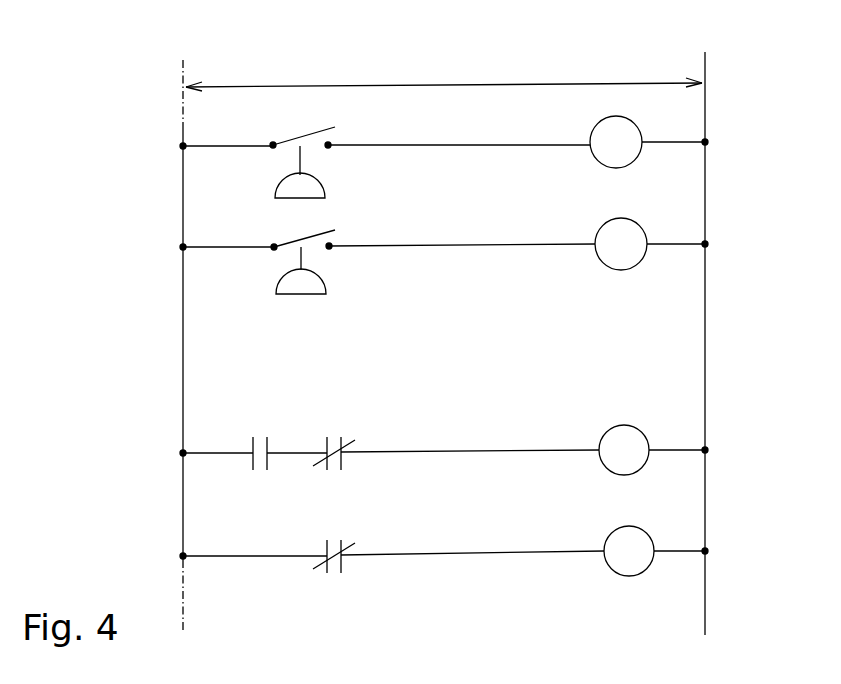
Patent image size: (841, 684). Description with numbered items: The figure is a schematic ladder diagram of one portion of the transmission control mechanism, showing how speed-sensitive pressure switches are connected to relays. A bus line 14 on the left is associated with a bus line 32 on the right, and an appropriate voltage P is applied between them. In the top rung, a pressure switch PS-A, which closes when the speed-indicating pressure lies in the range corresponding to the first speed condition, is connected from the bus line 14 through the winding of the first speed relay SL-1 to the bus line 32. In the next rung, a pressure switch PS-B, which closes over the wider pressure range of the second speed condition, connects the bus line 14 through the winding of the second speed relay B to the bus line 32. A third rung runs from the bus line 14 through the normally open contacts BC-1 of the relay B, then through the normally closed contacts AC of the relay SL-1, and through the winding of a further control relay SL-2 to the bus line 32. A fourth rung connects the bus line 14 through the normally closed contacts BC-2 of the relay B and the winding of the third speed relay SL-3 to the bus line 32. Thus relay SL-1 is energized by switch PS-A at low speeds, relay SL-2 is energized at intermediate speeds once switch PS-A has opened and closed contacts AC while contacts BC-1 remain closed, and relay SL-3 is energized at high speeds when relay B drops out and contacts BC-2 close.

The bus line 14 is at (183, 118).
The bus line 32 is at (707, 72).
The voltage P is at (444, 70).
The pressure switch PS-A is at (277, 162).
The pressure switch PS-B is at (275, 262).
The first speed relay SL-1 is at (592, 126).
The second speed relay B is at (600, 223).
The normally open contacts BC-1 is at (253, 440).
The normally closed contacts AC is at (456, 436).
The control relay SL-2 is at (607, 431).
The normally closed contacts BC-2 is at (392, 536).
The third speed relay SL-3 is at (613, 531).